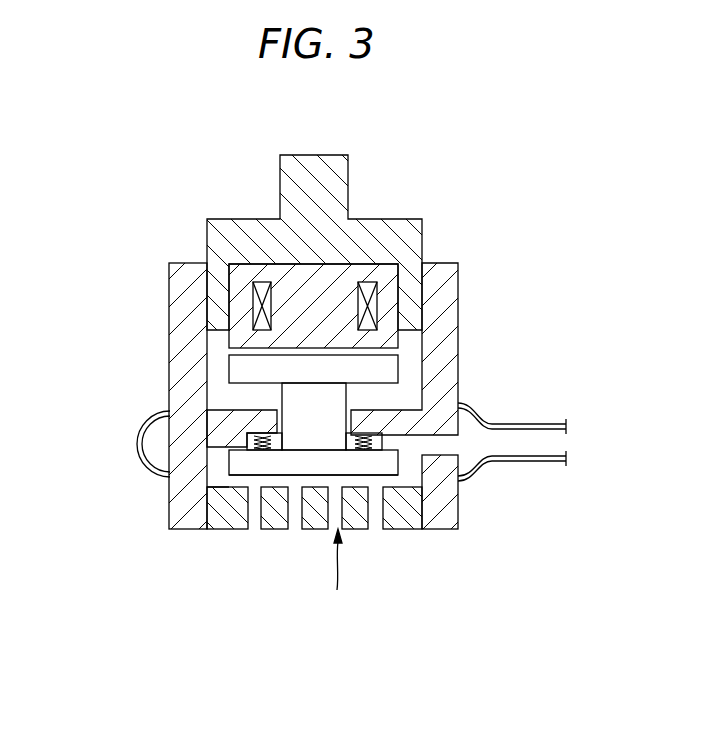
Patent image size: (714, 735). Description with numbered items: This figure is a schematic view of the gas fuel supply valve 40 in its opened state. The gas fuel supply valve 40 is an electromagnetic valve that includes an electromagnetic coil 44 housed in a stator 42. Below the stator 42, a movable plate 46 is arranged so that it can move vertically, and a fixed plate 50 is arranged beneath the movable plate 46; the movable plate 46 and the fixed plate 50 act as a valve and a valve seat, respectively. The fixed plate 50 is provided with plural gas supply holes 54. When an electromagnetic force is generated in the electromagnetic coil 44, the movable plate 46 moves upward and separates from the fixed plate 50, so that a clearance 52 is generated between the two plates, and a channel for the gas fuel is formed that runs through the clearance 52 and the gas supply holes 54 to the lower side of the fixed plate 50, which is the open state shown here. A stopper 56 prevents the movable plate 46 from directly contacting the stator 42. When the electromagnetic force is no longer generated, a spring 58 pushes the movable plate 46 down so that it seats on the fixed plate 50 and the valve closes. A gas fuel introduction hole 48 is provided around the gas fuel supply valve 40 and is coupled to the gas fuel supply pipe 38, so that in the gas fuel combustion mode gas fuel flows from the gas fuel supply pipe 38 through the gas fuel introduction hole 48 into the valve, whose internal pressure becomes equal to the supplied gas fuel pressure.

The gas fuel supply pipe 38 is at (541, 425).
The gas fuel supply valve 40 is at (414, 141).
The stator 42 is at (385, 276).
The electromagnetic coil 44 is at (366, 303).
The movable plate 46 is at (450, 410).
The gas fuel introduction hole 48 is at (452, 446).
The fixed plate 50 is at (418, 518).
The clearance 52 is at (244, 480).
The gas supply holes 54 is at (338, 576).
The stopper 56 is at (244, 440).
The spring 58 is at (388, 464).